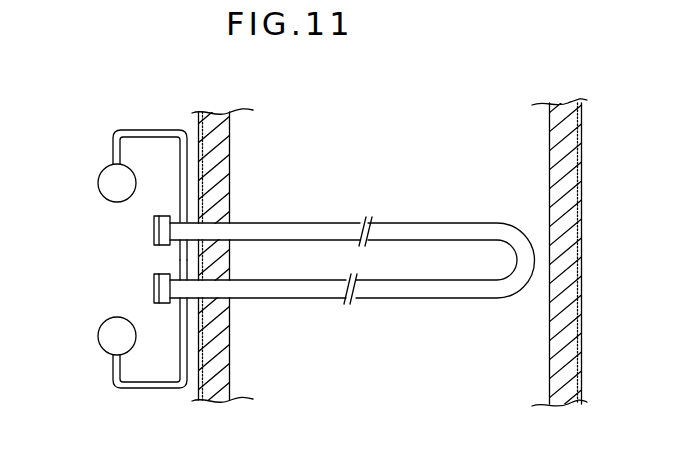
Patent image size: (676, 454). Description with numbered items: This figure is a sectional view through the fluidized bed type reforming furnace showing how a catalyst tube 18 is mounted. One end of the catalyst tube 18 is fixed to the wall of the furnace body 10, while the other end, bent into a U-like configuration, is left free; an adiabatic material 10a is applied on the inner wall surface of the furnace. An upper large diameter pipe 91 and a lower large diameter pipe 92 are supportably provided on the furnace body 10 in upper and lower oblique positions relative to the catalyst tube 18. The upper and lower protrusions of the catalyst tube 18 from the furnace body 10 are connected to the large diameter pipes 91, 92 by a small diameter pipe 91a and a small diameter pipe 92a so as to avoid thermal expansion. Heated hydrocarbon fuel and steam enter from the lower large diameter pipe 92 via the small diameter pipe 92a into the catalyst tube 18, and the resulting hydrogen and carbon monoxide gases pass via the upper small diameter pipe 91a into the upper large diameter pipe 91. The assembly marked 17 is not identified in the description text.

The furnace body 10 is at (199, 115).
The adiabatic material 10a is at (223, 137).
The heat pipe assembly 17 is at (344, 270).
The catalyst tube 18 is at (302, 222).
The upper large diameter pipe 91 is at (98, 183).
The upper small diameter pipe 91a is at (135, 130).
The lower large diameter pipe 92 is at (98, 336).
The lower small diameter pipe 92a is at (133, 390).